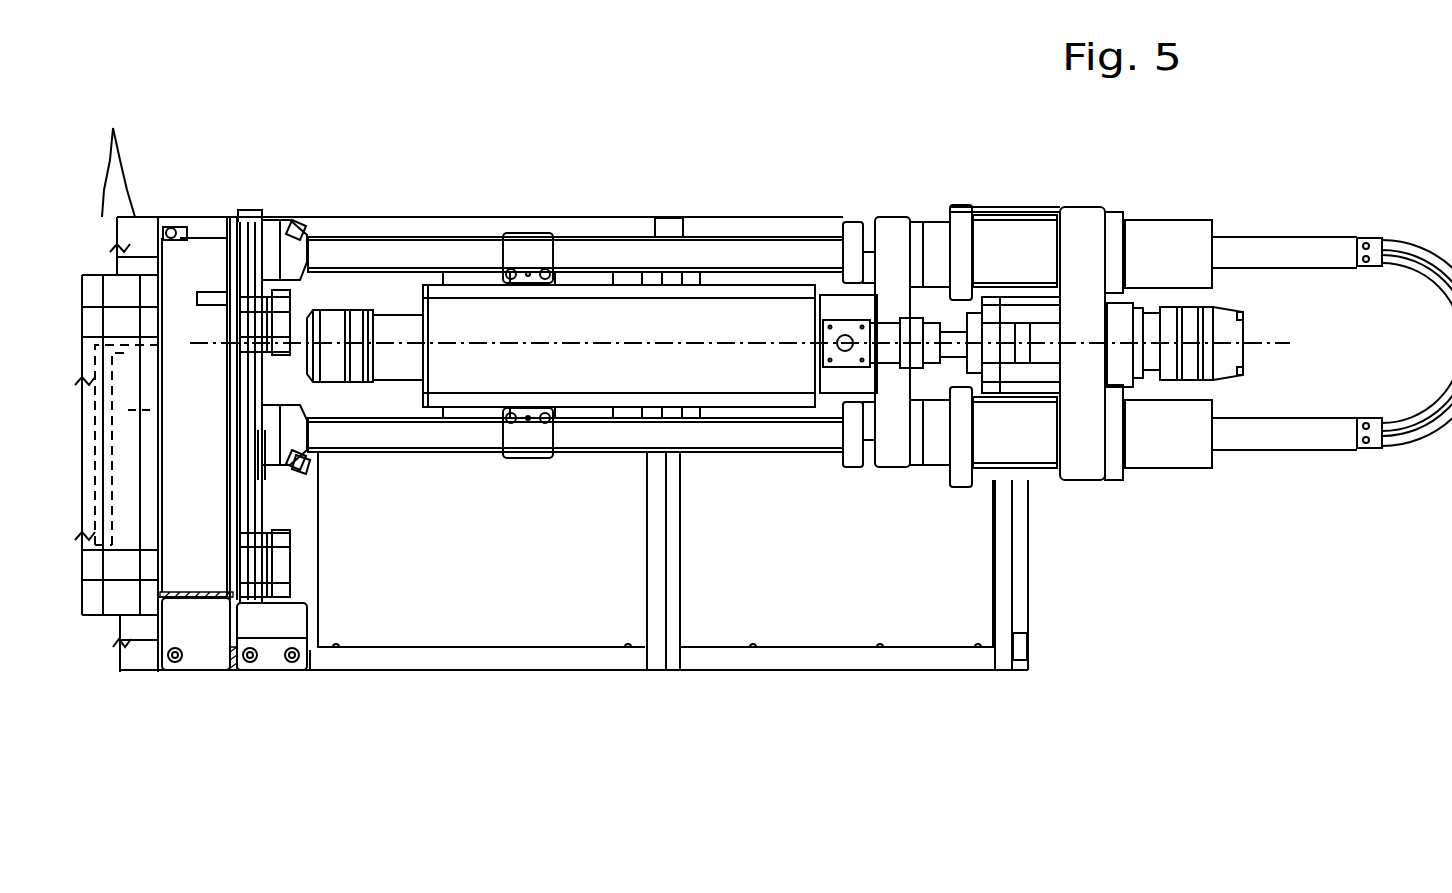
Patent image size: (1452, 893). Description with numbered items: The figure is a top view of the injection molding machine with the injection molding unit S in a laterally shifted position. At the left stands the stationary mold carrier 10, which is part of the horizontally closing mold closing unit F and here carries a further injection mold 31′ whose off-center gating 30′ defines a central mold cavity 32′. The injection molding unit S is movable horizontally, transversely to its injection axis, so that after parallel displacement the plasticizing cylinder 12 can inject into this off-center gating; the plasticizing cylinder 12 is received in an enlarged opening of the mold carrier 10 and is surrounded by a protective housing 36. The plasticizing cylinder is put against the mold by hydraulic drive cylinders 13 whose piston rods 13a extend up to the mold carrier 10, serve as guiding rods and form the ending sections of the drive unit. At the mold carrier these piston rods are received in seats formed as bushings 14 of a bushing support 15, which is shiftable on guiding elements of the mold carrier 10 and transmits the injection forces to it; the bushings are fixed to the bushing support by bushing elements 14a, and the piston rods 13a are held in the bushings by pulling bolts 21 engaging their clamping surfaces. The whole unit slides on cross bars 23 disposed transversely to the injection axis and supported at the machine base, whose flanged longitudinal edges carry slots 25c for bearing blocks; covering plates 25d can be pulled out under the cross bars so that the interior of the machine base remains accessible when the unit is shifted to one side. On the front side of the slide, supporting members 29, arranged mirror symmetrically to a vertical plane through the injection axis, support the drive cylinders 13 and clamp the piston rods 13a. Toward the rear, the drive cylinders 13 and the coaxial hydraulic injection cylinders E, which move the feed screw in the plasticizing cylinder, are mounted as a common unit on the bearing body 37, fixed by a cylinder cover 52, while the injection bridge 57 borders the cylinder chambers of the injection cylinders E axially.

The stationary mold carrier 10 is at (205, 524).
The plasticizing cylinder 12 is at (390, 323).
The drive cylinder 13 is at (916, 252).
The piston rod 13a is at (452, 253).
The bushing 14 is at (302, 445).
The bushing element 14a is at (277, 447).
The bushing support 15 is at (263, 383).
The pulling bolt 21 is at (304, 214).
The cross bar 23 is at (670, 232).
The slot 25c is at (518, 662).
The covering plate 25d is at (491, 566).
The supporting member 29 is at (528, 243).
The off-center gating 30′ is at (166, 302).
The further injection mold 31′ is at (115, 154).
The mold cavity 32′ is at (156, 407).
The protective housing 36 is at (716, 376).
The bearing body 37 is at (889, 452).
The cylinder cover 52 is at (890, 238).
The injection bridge 57 is at (1084, 222).
The injection cylinder E is at (1018, 236).
The mold closing unit F is at (182, 200).
The injection molding unit S is at (832, 118).